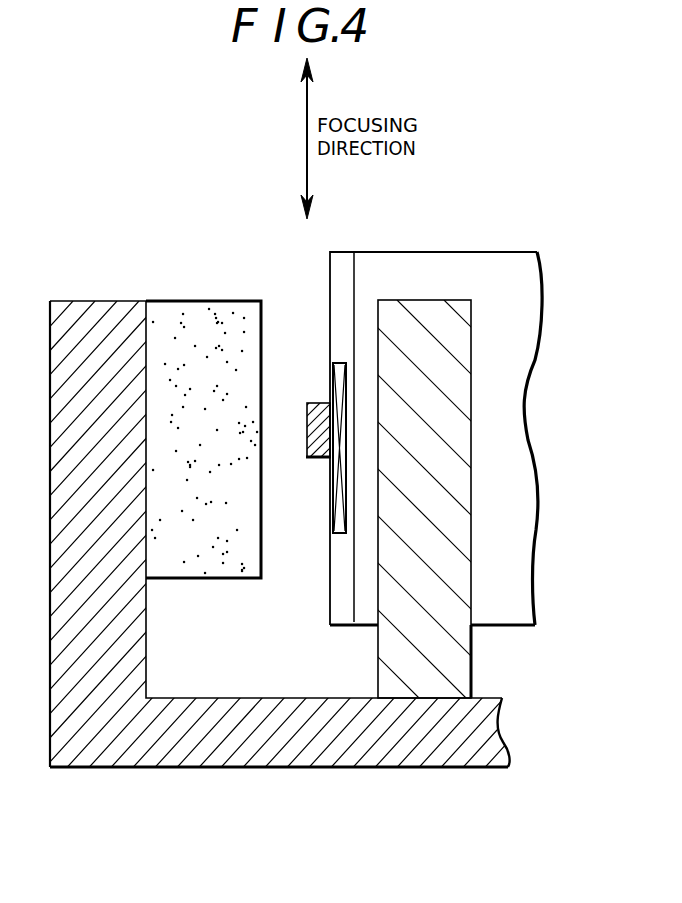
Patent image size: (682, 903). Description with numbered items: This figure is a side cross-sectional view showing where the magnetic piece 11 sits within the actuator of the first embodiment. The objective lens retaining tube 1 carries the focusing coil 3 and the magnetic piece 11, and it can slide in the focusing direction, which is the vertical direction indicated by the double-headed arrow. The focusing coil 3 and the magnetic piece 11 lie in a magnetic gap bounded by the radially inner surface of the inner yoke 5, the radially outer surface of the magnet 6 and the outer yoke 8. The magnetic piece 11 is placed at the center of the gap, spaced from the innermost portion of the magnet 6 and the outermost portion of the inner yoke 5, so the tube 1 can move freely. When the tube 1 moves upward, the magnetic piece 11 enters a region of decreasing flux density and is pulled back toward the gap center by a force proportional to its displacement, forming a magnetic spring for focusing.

The objective lens retaining tube 1 is at (340, 290).
The focusing coil 3 is at (338, 385).
The inner yoke 5 is at (455, 477).
The magnet 6 is at (188, 332).
The outer yoke 8 is at (97, 719).
The magnetic piece 11 is at (314, 403).